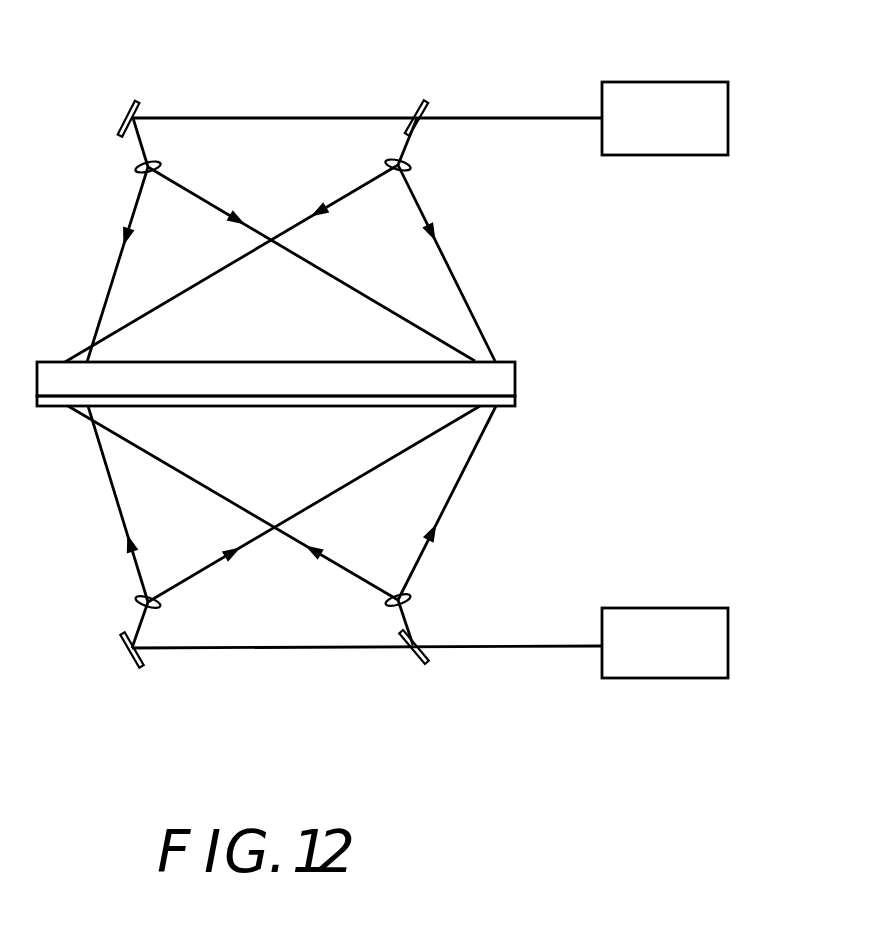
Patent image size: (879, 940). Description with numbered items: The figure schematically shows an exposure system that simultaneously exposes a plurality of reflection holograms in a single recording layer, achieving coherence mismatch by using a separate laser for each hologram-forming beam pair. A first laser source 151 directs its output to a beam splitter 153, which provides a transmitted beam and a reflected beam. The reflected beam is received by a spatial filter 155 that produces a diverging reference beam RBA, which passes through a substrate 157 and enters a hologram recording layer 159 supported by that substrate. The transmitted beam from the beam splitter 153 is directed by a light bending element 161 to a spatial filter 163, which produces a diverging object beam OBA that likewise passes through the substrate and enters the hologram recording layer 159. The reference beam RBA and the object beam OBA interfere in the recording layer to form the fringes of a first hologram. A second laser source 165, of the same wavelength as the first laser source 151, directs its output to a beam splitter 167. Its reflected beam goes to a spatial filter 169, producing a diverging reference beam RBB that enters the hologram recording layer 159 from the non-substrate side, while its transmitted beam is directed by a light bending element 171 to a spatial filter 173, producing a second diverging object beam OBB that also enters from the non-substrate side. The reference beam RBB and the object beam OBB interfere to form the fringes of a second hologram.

The first laser source 151 is at (668, 82).
The beam splitter 153 is at (433, 103).
The spatial filter 155 is at (410, 166).
The substrate 157 is at (515, 378).
The hologram recording layer 159 is at (515, 401).
The light bending element 161 is at (133, 102).
The spatial filter 163 is at (136, 166).
The second laser source 165 is at (668, 678).
The beam splitter 167 is at (432, 663).
The spatial filter 169 is at (410, 601).
The light bending element 171 is at (124, 661).
The spatial filter 173 is at (160, 607).
The object beam OBA is at (178, 183).
The reference beam RBA is at (447, 258).
The object beam OBB is at (118, 510).
The reference beam RBB is at (455, 505).